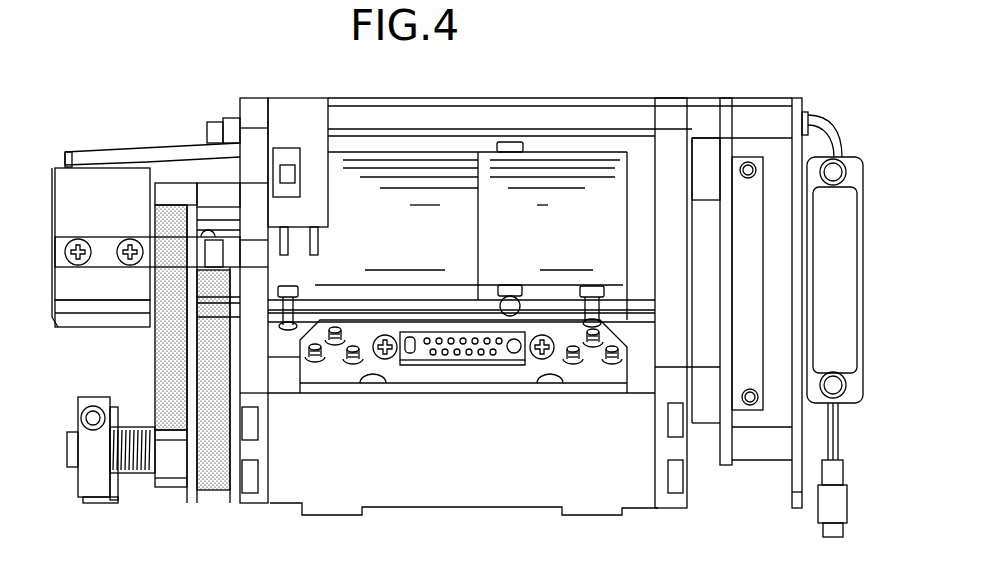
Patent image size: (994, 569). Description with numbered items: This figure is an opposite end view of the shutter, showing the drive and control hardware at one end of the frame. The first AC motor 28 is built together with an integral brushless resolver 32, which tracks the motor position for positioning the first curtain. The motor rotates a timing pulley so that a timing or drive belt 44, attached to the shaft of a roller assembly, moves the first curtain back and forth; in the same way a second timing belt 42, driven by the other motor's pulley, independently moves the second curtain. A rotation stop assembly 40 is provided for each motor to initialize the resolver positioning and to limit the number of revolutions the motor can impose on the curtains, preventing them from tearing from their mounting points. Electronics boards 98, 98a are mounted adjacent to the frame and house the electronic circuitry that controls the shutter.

The first AC motor 28 is at (403, 177).
The integral brushless resolver 32 is at (560, 177).
The rotation stop assembly 40 is at (52, 253).
The timing belt 42 is at (213, 463).
The timing or drive belt 44 is at (182, 487).
The electronics board 98 is at (790, 108).
The electronics board 98a is at (752, 108).